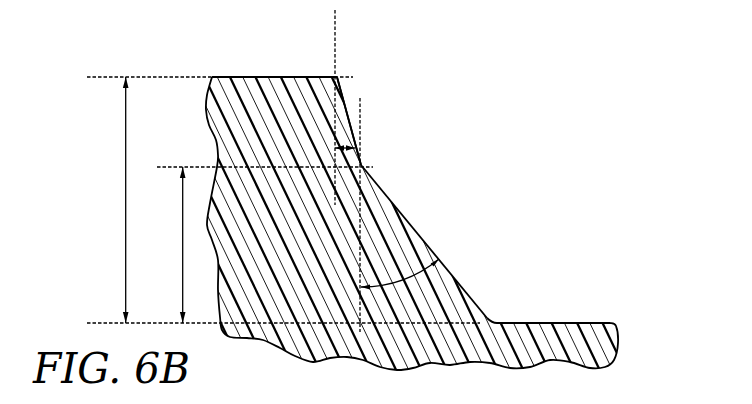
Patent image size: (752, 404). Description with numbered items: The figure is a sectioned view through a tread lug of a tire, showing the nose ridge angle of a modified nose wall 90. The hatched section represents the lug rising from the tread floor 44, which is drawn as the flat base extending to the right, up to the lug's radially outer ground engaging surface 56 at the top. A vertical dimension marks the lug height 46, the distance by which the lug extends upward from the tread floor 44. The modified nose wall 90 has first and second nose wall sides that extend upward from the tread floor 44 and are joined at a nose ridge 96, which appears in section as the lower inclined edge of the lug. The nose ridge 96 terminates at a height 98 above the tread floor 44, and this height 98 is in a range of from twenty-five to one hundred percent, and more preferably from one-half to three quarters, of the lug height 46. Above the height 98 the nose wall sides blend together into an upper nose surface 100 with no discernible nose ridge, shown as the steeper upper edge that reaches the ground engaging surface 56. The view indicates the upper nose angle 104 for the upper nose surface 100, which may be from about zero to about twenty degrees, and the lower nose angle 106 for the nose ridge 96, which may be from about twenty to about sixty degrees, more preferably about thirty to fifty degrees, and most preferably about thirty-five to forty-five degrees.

The tread floor 44 is at (545, 323).
The lug height 46 is at (125, 153).
The radially outer ground engaging surface 56 is at (262, 77).
The modified nose wall 90 is at (342, 97).
The upper nose surface 100 is at (342, 97).
The nose ridge 96 is at (388, 199).
The height 98 is at (182, 222).
The upper nose angle 104 is at (344, 142).
The lower nose angle 106 is at (405, 272).